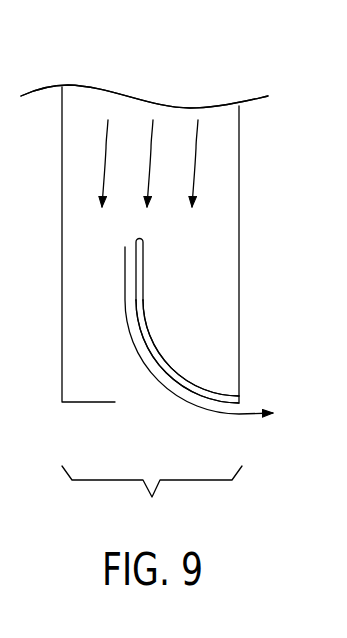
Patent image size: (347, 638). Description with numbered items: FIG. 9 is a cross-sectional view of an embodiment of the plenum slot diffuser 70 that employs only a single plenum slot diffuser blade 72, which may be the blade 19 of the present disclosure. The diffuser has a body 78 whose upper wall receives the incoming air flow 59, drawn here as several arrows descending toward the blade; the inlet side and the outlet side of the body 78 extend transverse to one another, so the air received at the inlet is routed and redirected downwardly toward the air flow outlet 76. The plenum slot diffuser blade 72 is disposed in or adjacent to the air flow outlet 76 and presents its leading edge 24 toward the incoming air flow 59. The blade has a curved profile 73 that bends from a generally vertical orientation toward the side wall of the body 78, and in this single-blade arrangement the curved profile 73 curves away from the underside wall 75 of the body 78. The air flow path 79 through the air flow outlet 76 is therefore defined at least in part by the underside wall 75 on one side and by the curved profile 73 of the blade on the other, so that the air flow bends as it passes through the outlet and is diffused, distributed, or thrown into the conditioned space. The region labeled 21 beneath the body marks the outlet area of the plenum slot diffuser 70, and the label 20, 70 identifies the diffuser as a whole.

The airfoil component 20 is at (200, 73).
The plenum slot diffuser 70 is at (200, 73).
The body 78 is at (239, 212).
The underside wall 75 is at (88, 402).
The incoming air flow 59 is at (195, 157).
The leading edge 24 is at (140, 238).
The curved profile 73 is at (152, 332).
The blade 19 is at (200, 388).
The plenum slot diffuser blade 72 is at (200, 388).
The air flow path 79 is at (137, 382).
The air flow outlet 76 is at (145, 405).
The outlet region 21 is at (152, 497).